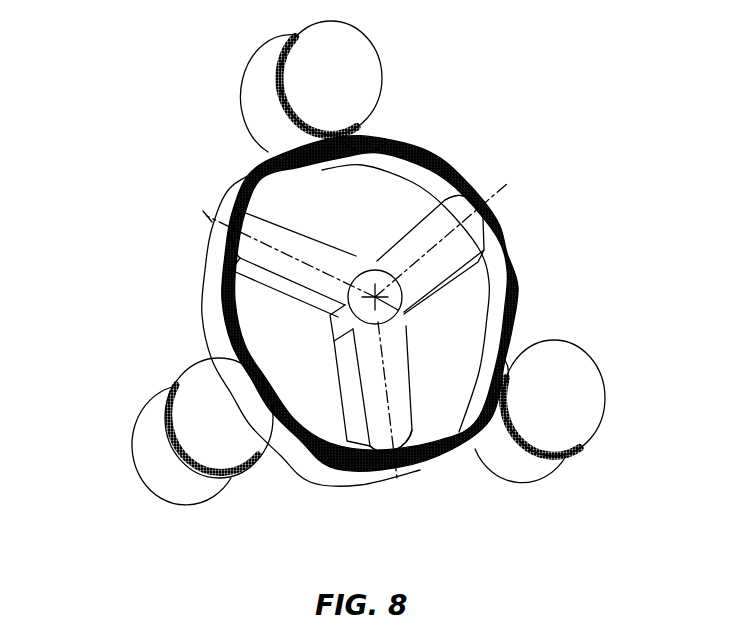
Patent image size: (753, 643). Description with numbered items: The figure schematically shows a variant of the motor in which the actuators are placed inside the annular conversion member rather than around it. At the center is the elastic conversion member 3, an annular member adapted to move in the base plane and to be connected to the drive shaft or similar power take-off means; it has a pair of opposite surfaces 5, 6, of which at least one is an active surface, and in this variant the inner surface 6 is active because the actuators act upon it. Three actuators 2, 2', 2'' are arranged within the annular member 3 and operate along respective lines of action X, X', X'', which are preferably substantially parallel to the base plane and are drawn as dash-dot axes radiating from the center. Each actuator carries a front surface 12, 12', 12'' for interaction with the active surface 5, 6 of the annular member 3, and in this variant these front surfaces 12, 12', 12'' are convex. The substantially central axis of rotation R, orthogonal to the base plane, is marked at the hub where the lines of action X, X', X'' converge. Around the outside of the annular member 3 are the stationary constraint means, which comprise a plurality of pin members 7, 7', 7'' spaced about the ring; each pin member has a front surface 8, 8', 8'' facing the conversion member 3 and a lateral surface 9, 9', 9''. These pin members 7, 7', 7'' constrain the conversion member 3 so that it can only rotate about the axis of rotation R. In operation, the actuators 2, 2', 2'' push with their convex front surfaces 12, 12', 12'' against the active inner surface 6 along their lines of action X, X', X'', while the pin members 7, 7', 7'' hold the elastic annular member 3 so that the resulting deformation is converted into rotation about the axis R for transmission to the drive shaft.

The actuator 2 is at (416, 254).
The actuator 2' is at (293, 285).
The actuator 2'' is at (391, 389).
The elastic conversion member 3 is at (191, 288).
The surface 5 is at (215, 258).
The inner surface 6 is at (432, 192).
The pin member 7 is at (346, 78).
The pin member 7' is at (571, 387).
The pin member 7'' is at (219, 458).
The front surface 8 is at (382, 121).
The front surface 8' is at (535, 330).
The front surface 8'' is at (289, 388).
The lateral surface 9 is at (245, 93).
The lateral surface 9' is at (520, 497).
The lateral surface 9'' is at (154, 445).
The front surface 12 is at (489, 175).
The front surface 12' is at (198, 279).
The front surface 12'' is at (369, 488).
The axis of rotation R is at (399, 310).
The line of action X is at (463, 240).
The line of action X' is at (272, 230).
The line of action X'' is at (411, 437).